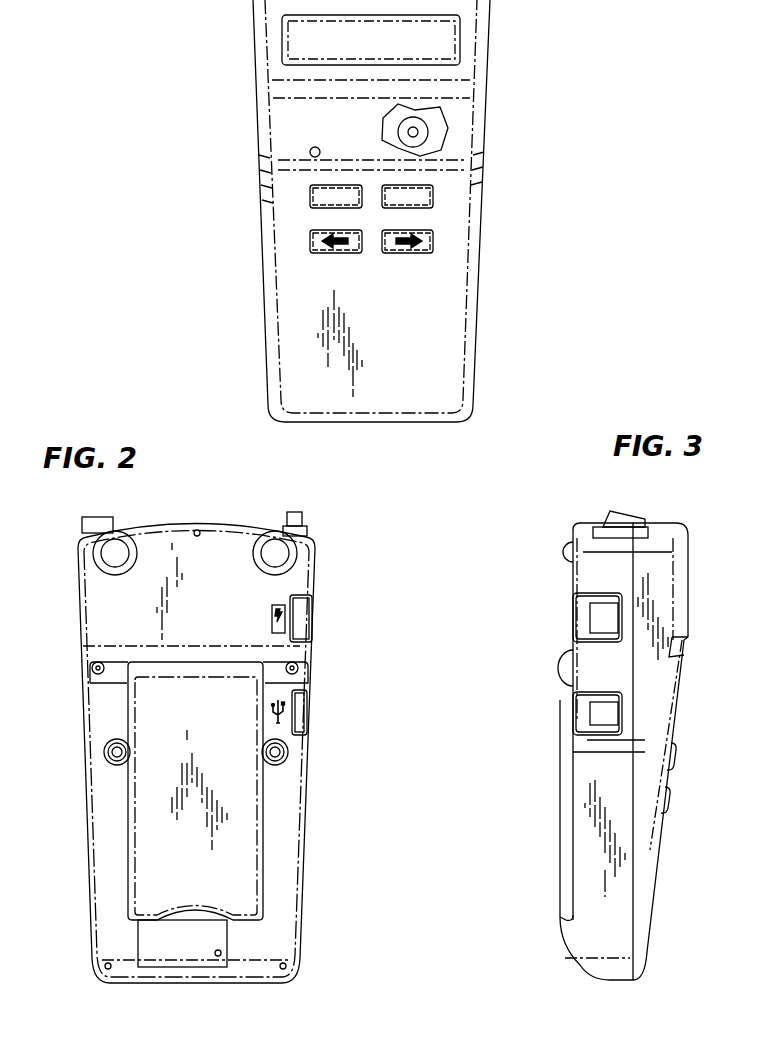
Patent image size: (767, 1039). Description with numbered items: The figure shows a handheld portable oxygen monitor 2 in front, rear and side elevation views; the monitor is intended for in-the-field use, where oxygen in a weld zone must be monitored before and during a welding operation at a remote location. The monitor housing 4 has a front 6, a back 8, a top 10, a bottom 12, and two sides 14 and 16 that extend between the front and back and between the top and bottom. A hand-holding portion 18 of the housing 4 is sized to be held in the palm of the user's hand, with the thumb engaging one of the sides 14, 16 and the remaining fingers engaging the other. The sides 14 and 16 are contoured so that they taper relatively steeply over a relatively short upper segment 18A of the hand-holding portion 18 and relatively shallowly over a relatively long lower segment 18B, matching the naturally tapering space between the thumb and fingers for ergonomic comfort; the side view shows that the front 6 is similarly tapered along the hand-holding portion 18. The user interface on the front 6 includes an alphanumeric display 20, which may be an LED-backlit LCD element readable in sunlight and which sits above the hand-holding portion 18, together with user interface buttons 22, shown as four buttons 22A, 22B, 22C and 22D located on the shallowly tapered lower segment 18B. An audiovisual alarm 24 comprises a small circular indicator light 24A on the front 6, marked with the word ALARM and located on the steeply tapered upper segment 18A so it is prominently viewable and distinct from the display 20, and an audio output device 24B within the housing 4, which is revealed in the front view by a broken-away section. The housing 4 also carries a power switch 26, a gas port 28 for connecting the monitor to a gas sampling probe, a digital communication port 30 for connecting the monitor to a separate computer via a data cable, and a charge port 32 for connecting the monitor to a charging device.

In FIG. 1, the handheld portable oxygen monitor 2 is at (518, 28).
In FIG. 2, the handheld portable oxygen monitor 2 is at (350, 536).
In FIG. 3, the handheld portable oxygen monitor 2 is at (725, 581).
In FIG. 2, the monitor housing 4 is at (219, 552).
In FIG. 3, the monitor housing 4 is at (587, 540).
In FIG. 1, the front 6 is at (438, 318).
In FIG. 3, the front 6 is at (655, 908).
In FIG. 2, the back 8 is at (103, 602).
In FIG. 3, the back 8 is at (573, 583).
In FIG. 2, the top 10 is at (163, 526).
In FIG. 3, the top 10 is at (670, 522).
In FIG. 1, the bottom 12 is at (380, 422).
In FIG. 2, the bottom 12 is at (185, 983).
In FIG. 3, the bottom 12 is at (615, 983).
In FIG. 1, the side 14 is at (260, 168).
In FIG. 2, the side 14 is at (300, 763).
In FIG. 3, the side 14 is at (590, 745).
In FIG. 1, the side 16 is at (482, 165).
In FIG. 2, the side 16 is at (93, 828).
In FIG. 1, the hand-holding portion 18 is at (199, 95).
In FIG. 2, the hand-holding portion 18 is at (356, 647).
In FIG. 3, the hand-holding portion 18 is at (716, 643).
In FIG. 1, the upper segment 18A is at (528, 92).
In FIG. 2, the upper segment 18A is at (62, 647).
In FIG. 3, the upper segment 18A is at (507, 643).
In FIG. 1, the lower segment 18B is at (528, 176).
In FIG. 2, the lower segment 18B is at (62, 742).
In FIG. 3, the lower segment 18B is at (507, 747).
In FIG. 1, the alphanumeric display 20 is at (283, 40).
In FIG. 1, the user interface buttons 22 is at (308, 276).
In FIG. 3, the user interface buttons 22 is at (680, 737).
In FIG. 1, the user interface button 22A is at (310, 196).
In FIG. 1, the user interface button 22B is at (433, 196).
In FIG. 1, the user interface button 22C is at (310, 241).
In FIG. 1, the user interface button 22D is at (433, 241).
In FIG. 1, the audiovisual alarm 24 is at (378, 117).
In FIG. 1, the indicator light 24A is at (309, 152).
In FIG. 1, the audio output device 24B is at (420, 132).
In FIG. 2, the power switch 26 is at (295, 512).
In FIG. 3, the power switch 26 is at (608, 512).
In FIG. 2, the gas port 28 is at (88, 517).
In FIG. 3, the gas port 28 is at (643, 516).
In FIG. 2, the digital communication port 30 is at (307, 708).
In FIG. 3, the digital communication port 30 is at (600, 707).
In FIG. 2, the charge port 32 is at (312, 613).
In FIG. 3, the charge port 32 is at (600, 614).